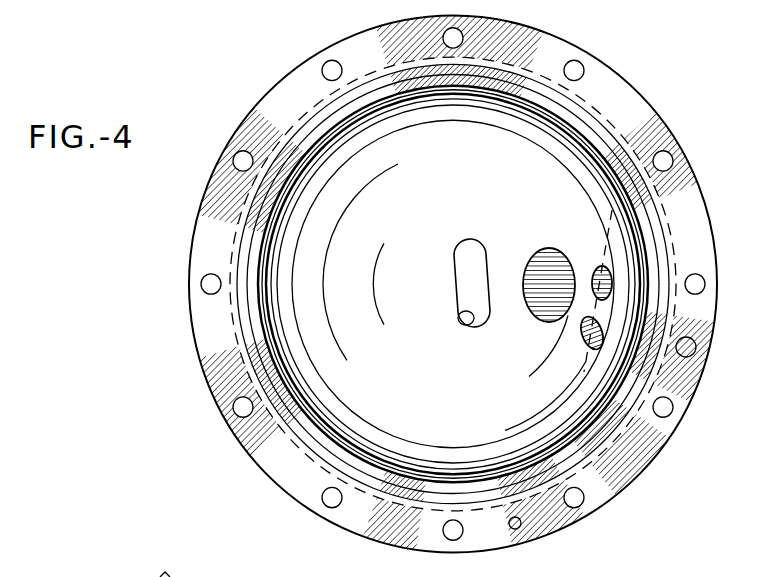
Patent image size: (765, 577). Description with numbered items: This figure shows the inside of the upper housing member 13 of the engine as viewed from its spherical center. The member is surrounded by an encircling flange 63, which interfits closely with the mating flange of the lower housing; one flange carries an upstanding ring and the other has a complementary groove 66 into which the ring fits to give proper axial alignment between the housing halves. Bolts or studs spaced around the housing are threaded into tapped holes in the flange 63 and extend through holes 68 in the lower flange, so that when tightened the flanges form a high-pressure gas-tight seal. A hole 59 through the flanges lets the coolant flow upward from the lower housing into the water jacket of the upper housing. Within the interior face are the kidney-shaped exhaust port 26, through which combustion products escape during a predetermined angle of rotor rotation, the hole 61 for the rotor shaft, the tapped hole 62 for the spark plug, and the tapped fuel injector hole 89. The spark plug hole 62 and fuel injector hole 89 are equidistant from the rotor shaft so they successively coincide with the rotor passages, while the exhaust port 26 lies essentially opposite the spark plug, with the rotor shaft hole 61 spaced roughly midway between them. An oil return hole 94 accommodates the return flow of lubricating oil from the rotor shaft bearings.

The upper housing member 13 is at (190, 245).
The encircling flange 63 is at (218, 336).
The complementary groove 66 is at (318, 115).
The hole 59 is at (694, 352).
The oil return hole 94 is at (513, 530).
The exhaust port 26 is at (474, 330).
The hole for rotor shaft 61 is at (545, 250).
The tapped hole for spark plug 62 is at (598, 267).
The fuel injector hole 89 is at (583, 341).
The holes 68 is at (166, 563).